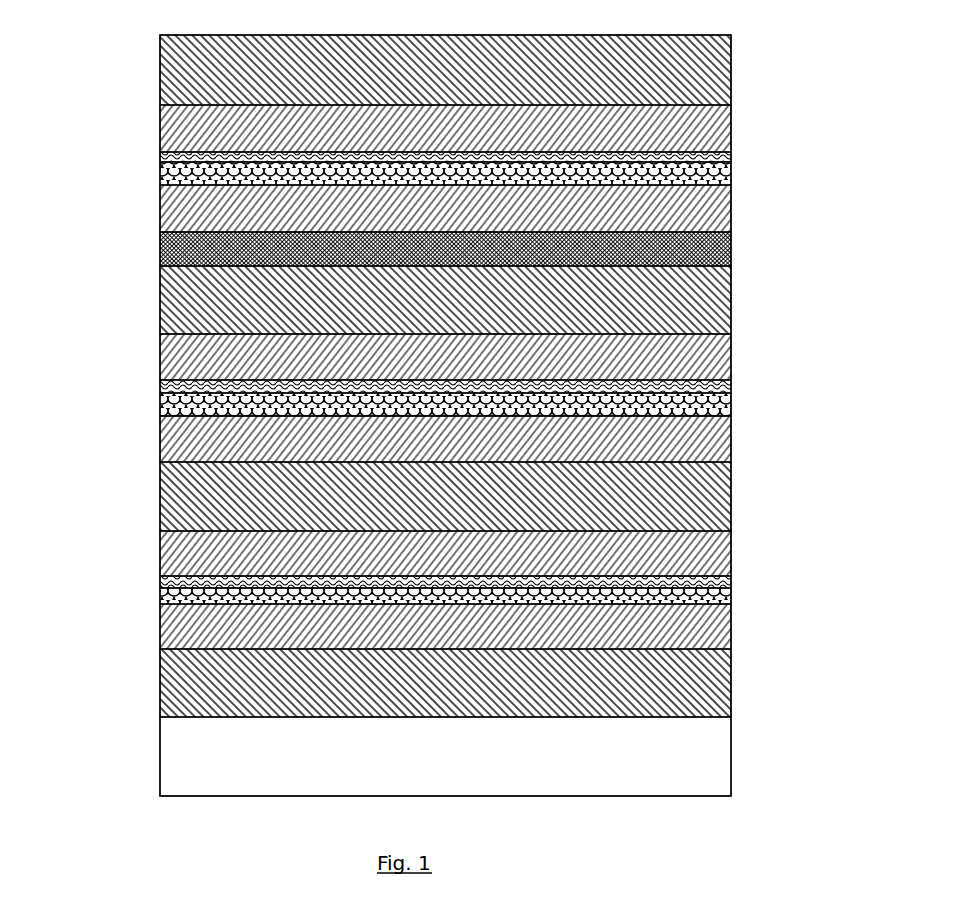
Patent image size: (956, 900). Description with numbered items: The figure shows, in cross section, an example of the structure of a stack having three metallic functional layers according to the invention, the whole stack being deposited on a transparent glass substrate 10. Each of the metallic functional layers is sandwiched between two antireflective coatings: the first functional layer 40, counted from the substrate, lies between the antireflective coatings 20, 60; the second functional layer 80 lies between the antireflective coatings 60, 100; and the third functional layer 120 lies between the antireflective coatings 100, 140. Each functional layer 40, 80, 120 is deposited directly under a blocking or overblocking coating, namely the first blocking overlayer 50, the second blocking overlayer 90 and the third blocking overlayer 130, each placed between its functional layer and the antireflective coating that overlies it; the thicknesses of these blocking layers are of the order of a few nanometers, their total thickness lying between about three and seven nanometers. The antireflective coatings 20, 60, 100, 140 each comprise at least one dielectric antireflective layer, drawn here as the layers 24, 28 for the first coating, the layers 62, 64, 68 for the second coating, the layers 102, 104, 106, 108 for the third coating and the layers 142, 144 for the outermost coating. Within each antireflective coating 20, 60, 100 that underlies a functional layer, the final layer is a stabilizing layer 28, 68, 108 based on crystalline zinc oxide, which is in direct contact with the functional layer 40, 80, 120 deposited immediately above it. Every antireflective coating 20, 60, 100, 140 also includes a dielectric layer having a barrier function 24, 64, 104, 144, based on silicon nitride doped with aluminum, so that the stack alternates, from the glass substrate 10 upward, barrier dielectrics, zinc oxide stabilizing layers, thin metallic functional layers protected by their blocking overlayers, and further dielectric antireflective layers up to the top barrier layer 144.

The transparent glass substrate 10 is at (457, 745).
The antireflective coating 20 is at (742, 605).
The dielectric layer having a barrier function 24 is at (168, 683).
The final stabilizing layer 28 is at (168, 620).
The first functional layer 40 is at (731, 596).
The first blocking overlayer 50 is at (165, 583).
The antireflective coating 60 is at (742, 418).
The dielectric antireflective layer 62 is at (165, 560).
The dielectric layer having a barrier function 64 is at (168, 508).
The final stabilizing layer 68 is at (165, 437).
The second functional layer 80 is at (731, 408).
The second blocking overlayer 90 is at (165, 385).
The antireflective coating 100 is at (742, 190).
The dielectric antireflective layer 102 is at (165, 362).
The dielectric layer having a barrier function 104 is at (168, 312).
The dielectric antireflective layer 106 is at (165, 247).
The final stabilizing layer 108 is at (165, 215).
The third functional layer 120 is at (731, 166).
The third blocking overlayer 130 is at (165, 158).
The antireflective coating 140 is at (742, 37).
The dielectric antireflective layer 142 is at (165, 126).
The dielectric layer having a barrier function 144 is at (163, 90).